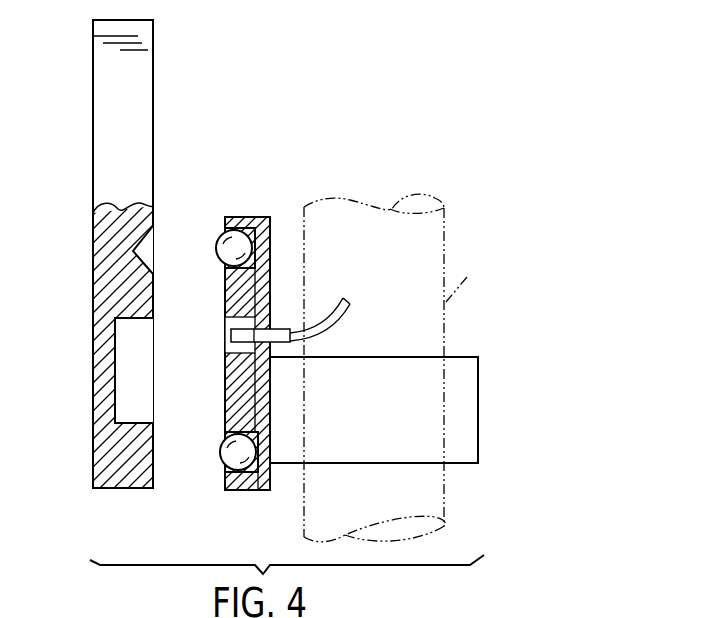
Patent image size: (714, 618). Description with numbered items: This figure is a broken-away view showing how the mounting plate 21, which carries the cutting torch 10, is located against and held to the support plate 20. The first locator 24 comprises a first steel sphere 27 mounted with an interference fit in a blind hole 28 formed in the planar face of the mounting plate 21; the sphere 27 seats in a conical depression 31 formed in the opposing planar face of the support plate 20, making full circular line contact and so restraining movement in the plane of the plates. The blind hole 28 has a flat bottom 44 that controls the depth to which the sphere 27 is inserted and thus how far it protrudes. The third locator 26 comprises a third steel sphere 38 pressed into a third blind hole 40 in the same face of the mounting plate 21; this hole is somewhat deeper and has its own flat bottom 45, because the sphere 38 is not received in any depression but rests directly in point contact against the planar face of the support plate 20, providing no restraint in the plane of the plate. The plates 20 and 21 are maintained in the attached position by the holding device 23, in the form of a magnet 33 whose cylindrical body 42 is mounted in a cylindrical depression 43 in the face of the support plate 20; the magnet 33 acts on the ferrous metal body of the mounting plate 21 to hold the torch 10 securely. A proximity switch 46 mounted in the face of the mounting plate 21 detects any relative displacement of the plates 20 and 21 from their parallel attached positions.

The cutting torch 10 is at (378, 368).
The support plate 20 is at (153, 71).
The mounting plate 21 is at (260, 217).
The holding device 23 is at (127, 366).
The first locator 24 is at (210, 229).
The third locator 26 is at (221, 467).
The first steel sphere 27 is at (223, 266).
The blind hole 28 is at (251, 239).
The conical depression 31 is at (153, 247).
The magnet 33 is at (127, 397).
The third steel sphere 38 is at (219, 443).
The third blind hole 40 is at (260, 436).
The cylindrical body 42 is at (127, 312).
The cylindrical depression 43 is at (118, 424).
The flat bottom 44 is at (266, 279).
The flat bottom 45 is at (246, 476).
The proximity switch 46 is at (278, 342).